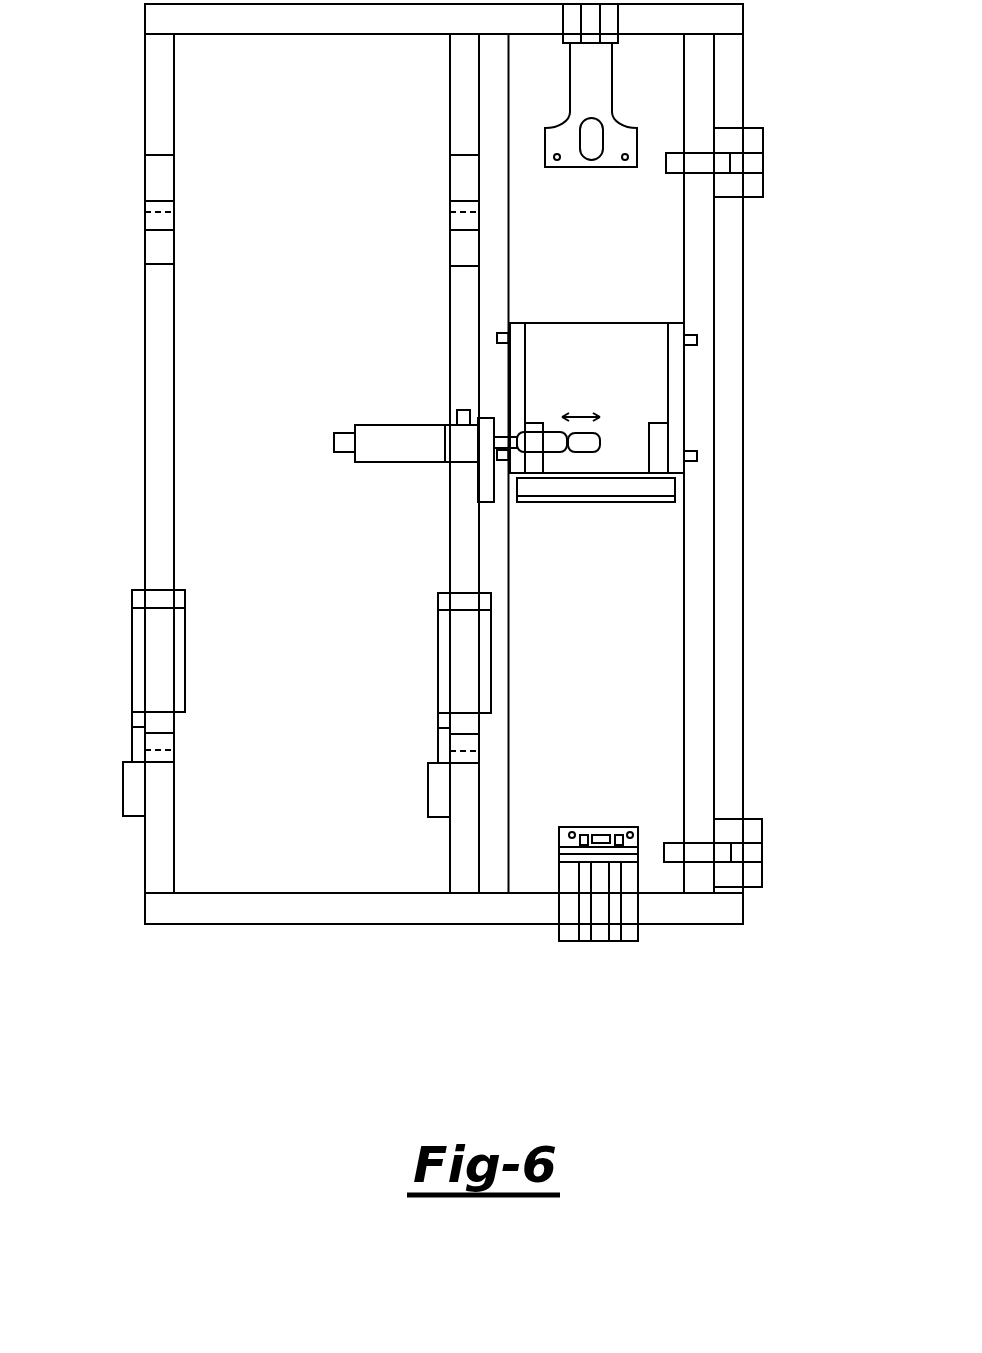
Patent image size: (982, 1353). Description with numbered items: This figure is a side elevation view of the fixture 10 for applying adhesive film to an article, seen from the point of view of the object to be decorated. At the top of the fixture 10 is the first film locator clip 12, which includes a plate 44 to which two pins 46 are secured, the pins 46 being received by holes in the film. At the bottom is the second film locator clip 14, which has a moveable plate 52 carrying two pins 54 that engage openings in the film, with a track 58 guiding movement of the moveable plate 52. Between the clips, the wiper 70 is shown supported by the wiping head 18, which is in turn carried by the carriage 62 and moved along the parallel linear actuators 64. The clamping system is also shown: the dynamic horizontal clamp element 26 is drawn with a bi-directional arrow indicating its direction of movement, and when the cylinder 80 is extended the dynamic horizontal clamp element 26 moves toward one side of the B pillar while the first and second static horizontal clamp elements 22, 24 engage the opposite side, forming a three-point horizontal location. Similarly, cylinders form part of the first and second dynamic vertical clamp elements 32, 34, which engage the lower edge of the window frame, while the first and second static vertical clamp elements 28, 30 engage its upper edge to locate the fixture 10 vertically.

The fixture 10 is at (323, 915).
The first film locator clip 12 is at (605, 88).
The second film locator clip 14 is at (567, 933).
The wiping head 18 is at (665, 505).
The first static horizontal clamp element 22 is at (748, 143).
The second static horizontal clamp element 24 is at (755, 822).
The dynamic horizontal clamp element 26 is at (547, 443).
The first static vertical clamp element 28 is at (463, 243).
The second static vertical clamp element 30 is at (157, 239).
The first dynamic vertical clamp element 32 is at (440, 798).
The second dynamic vertical clamp element 34 is at (133, 793).
The plate 44 is at (574, 100).
The pins 46 is at (625, 163).
The moveable plate 52 is at (629, 879).
The pins 54 is at (632, 832).
The track 58 is at (598, 934).
The carriage 62 is at (644, 386).
The linear actuators 64 is at (505, 227).
The wiper 70 is at (548, 490).
The cylinder 80 is at (381, 447).